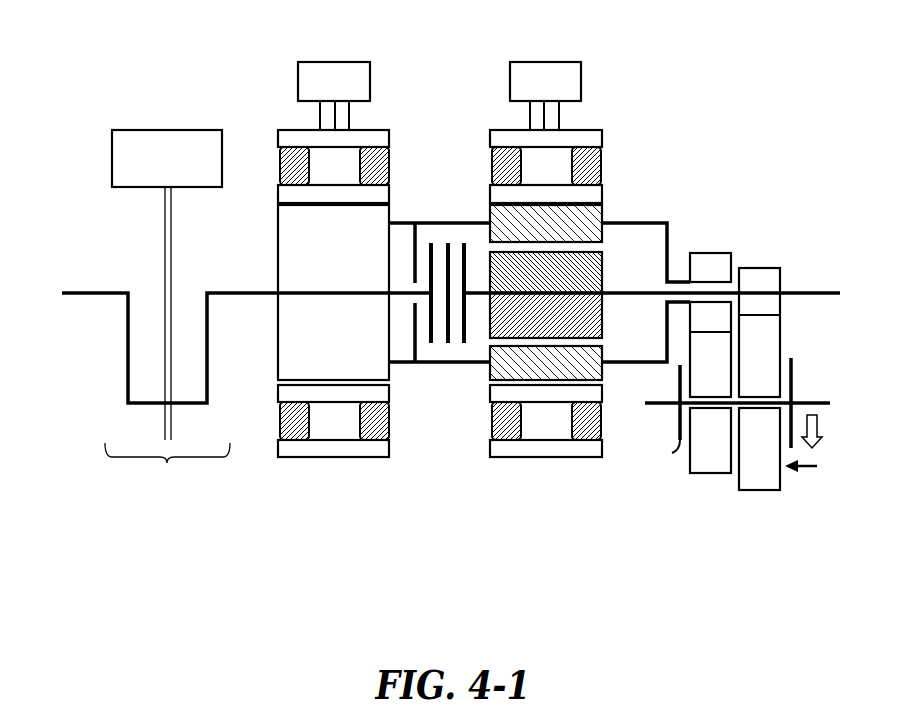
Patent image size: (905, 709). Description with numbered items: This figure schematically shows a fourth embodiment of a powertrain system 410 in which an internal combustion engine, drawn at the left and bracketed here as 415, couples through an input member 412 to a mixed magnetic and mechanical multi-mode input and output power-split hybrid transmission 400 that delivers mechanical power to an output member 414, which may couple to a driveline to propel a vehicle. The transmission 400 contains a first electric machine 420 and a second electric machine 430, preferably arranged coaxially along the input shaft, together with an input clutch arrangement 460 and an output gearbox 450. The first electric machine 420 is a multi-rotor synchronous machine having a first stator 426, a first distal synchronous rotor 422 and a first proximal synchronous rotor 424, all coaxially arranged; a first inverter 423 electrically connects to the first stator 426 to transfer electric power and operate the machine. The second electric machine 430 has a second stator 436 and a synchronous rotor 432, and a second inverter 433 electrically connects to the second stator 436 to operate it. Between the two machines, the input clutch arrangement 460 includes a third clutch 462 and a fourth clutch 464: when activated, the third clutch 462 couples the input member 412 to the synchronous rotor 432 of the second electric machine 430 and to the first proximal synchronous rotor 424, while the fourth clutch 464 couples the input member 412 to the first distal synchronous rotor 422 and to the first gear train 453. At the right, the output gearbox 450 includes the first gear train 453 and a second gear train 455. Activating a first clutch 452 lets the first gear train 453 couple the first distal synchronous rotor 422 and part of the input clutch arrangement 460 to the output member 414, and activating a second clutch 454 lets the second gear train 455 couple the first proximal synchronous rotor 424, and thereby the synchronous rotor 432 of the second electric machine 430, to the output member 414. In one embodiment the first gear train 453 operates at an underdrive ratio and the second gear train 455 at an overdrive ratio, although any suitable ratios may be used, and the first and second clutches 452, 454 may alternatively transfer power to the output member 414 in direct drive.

The transmission 400 is at (238, 610).
The powertrain system 410 is at (115, 106).
The input member 412 is at (254, 291).
The output member 414 is at (806, 397).
The engine assembly 415 is at (167, 463).
The first electric machine 420 is at (586, 279).
The first distal synchronous rotor 422 is at (602, 262).
The first inverter 423 is at (582, 82).
The first proximal synchronous rotor 424 is at (602, 212).
The first stator 426 is at (602, 140).
The second electric machine 430 is at (308, 281).
The synchronous rotor 432 is at (278, 365).
The second inverter 433 is at (298, 80).
The second stator 436 is at (278, 425).
The output gearbox 450 is at (742, 432).
The first clutch 452 is at (785, 364).
The first gear train 453 is at (737, 497).
The second clutch 454 is at (679, 458).
The second gear train 455 is at (733, 497).
The input clutch arrangement 460 is at (439, 343).
The third clutch 462 is at (422, 260).
The fourth clutch 464 is at (464, 342).